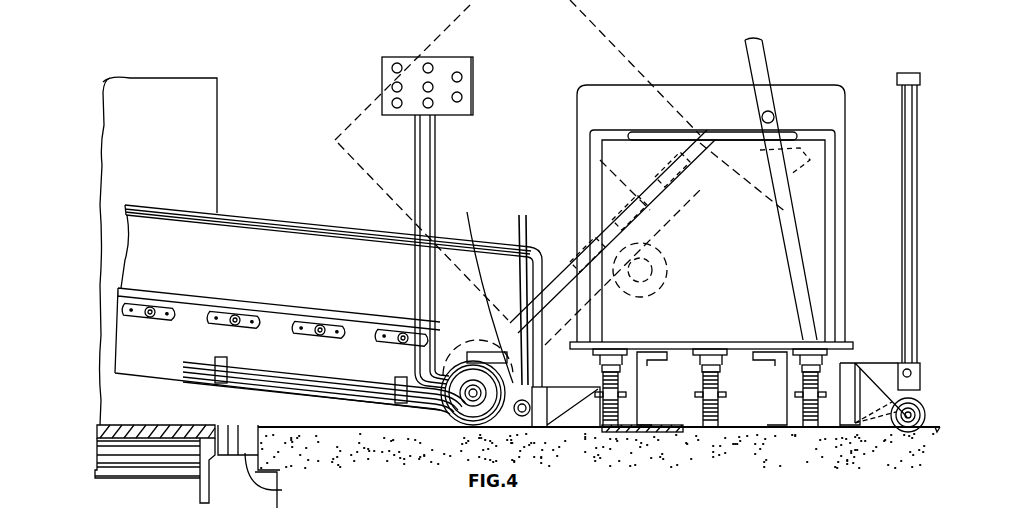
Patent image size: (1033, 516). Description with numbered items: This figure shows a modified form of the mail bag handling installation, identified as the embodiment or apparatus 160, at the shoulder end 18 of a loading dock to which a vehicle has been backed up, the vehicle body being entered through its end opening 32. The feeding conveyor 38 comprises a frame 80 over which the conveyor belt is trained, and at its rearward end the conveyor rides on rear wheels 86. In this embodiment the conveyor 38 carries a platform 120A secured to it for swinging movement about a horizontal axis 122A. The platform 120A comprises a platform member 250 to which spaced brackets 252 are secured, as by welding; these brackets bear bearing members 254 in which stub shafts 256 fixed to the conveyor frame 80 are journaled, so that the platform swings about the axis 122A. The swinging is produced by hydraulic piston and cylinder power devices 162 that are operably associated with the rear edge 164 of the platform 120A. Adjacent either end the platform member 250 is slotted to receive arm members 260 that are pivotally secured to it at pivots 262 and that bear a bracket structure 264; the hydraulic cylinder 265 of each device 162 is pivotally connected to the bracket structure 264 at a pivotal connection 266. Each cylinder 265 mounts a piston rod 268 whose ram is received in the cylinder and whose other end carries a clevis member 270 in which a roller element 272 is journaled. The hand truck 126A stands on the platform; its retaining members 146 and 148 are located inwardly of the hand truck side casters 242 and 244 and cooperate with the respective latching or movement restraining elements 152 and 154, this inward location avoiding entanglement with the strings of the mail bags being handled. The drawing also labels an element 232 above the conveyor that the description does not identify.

The end opening 32 is at (217, 107).
The shoulder end 18 is at (280, 493).
The feeding conveyor 38 is at (264, 170).
The frame 80 is at (296, 250).
The embodiment 160 is at (389, 198).
The junction box 232 is at (405, 66).
The stub shafts 256 is at (481, 287).
The bearing members 254 is at (522, 240).
The horizontal axis 122A is at (510, 418).
The rear wheels 86 is at (455, 407).
The corner bracket 252 is at (553, 428).
The hand truck 126A is at (820, 68).
The side caster 242 is at (645, 337).
The piston rod 268 is at (787, 230).
The latching element 154 is at (663, 348).
The side caster 244 is at (828, 328).
The retaining member 148 is at (637, 397).
The latching element 152 is at (760, 350).
The platform 120A is at (636, 440).
The platform member 250 is at (677, 433).
The pivot 262 is at (690, 430).
The retaining member 146 is at (785, 412).
The arm members 260 is at (773, 428).
The rear edge 164 is at (848, 428).
The hydraulic piston and cylinder power devices 162 is at (896, 112).
The hydraulic cylinder 265 is at (902, 302).
The pivotal connection 266 is at (915, 343).
The bracket structure 264 is at (875, 362).
The clevis member 270 is at (906, 433).
The roller element 272 is at (936, 437).